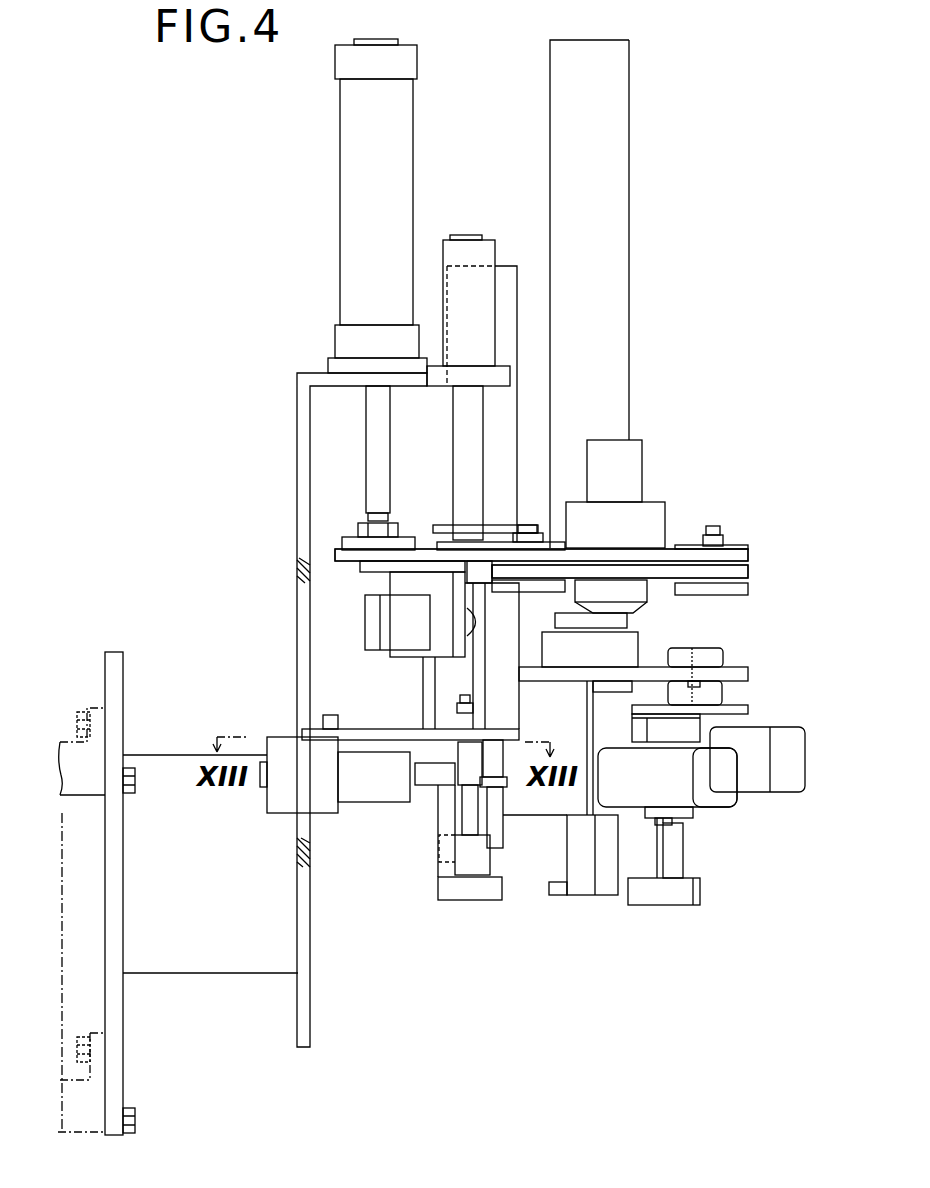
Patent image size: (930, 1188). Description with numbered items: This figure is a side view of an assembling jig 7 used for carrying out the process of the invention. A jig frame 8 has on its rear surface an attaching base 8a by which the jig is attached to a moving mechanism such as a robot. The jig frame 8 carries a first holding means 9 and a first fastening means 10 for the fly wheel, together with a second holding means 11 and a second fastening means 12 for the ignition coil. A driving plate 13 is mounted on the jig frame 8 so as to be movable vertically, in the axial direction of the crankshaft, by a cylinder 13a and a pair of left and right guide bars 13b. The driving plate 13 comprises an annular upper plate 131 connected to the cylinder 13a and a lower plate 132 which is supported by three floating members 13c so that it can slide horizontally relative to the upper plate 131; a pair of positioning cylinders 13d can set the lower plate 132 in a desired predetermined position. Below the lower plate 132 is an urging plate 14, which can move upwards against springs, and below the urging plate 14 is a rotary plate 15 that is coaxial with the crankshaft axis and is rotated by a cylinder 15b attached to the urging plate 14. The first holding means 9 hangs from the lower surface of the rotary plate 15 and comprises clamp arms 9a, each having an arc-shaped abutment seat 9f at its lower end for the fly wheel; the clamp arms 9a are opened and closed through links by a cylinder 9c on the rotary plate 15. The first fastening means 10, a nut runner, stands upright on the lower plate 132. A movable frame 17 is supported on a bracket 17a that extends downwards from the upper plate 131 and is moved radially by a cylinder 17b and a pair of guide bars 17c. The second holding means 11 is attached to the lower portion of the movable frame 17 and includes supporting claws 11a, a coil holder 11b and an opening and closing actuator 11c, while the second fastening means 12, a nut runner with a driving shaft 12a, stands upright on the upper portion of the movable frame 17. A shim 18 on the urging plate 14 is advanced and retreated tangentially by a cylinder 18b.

The assembling jig 7 is at (300, 243).
The jig frame 8 is at (300, 515).
The attaching base 8a is at (92, 712).
The first holding means 9 is at (706, 839).
The clamp arm 9a is at (673, 848).
The cylinder 9c is at (782, 775).
The abutment seat 9f is at (660, 893).
The first fastening means 10 is at (625, 376).
The second holding means 11 is at (427, 850).
The supporting claw 11a is at (470, 890).
The coil holder 11b is at (473, 838).
The opening and closing actuator 11c is at (283, 788).
The second fastening means 12 is at (508, 409).
The driving shaft 12a is at (493, 827).
The driving plate 13 is at (763, 570).
The cylinder 13a is at (393, 160).
The guide bar 13b is at (462, 470).
The floating member 13c is at (535, 523).
The positioning cylinder 13d is at (625, 490).
The upper plate 131 is at (737, 557).
The lower plate 132 is at (728, 577).
The urging plate 14 is at (733, 673).
The rotary plate 15 is at (733, 712).
The cylinder 15b is at (718, 655).
The movable frame 17 is at (502, 632).
The bracket 17a is at (430, 578).
The cylinder 17b is at (375, 620).
The guide bar 17c is at (481, 628).
The shim 18 is at (557, 897).
The cylinder 18b is at (713, 790).